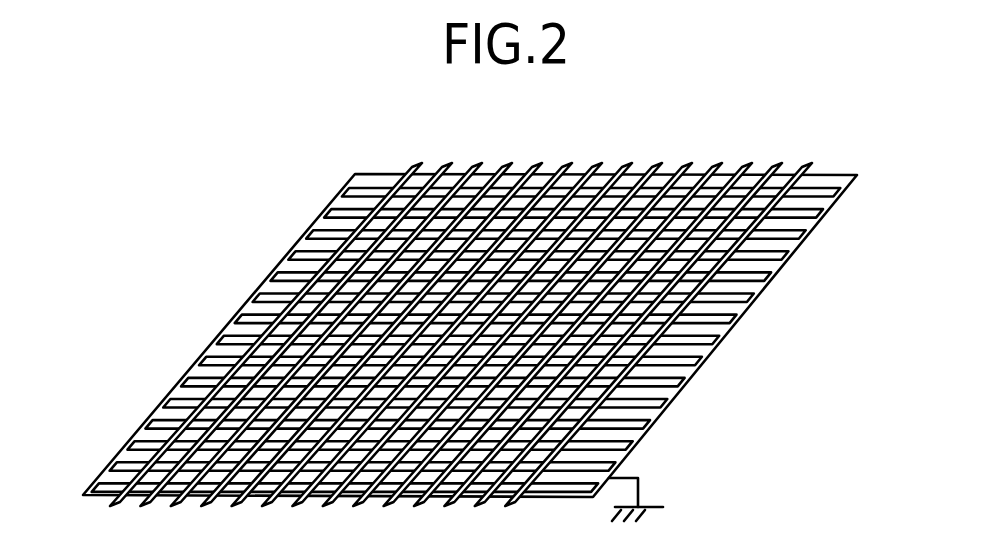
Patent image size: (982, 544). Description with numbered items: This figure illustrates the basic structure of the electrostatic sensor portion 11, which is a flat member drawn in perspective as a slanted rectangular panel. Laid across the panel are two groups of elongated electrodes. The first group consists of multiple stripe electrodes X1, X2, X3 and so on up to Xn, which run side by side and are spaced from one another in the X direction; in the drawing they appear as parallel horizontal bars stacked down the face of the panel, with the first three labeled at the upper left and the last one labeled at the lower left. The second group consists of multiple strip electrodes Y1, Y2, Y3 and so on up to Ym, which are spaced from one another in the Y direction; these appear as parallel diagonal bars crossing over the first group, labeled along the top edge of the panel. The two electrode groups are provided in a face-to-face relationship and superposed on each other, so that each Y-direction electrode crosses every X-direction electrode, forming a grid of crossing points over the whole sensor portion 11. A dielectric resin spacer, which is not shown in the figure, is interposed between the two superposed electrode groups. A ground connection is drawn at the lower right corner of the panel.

The electrostatic sensor portion 11 is at (459, 309).
The stripe electrode X1 is at (565, 191).
The stripe electrode X2 is at (547, 215).
The stripe electrode X3 is at (530, 239).
The stripe electrode Xn is at (330, 475).
The strip electrode Y1 is at (269, 320).
The strip electrode Y2 is at (301, 320).
The strip electrode Y3 is at (334, 320).
The strip electrode Ym is at (630, 143).